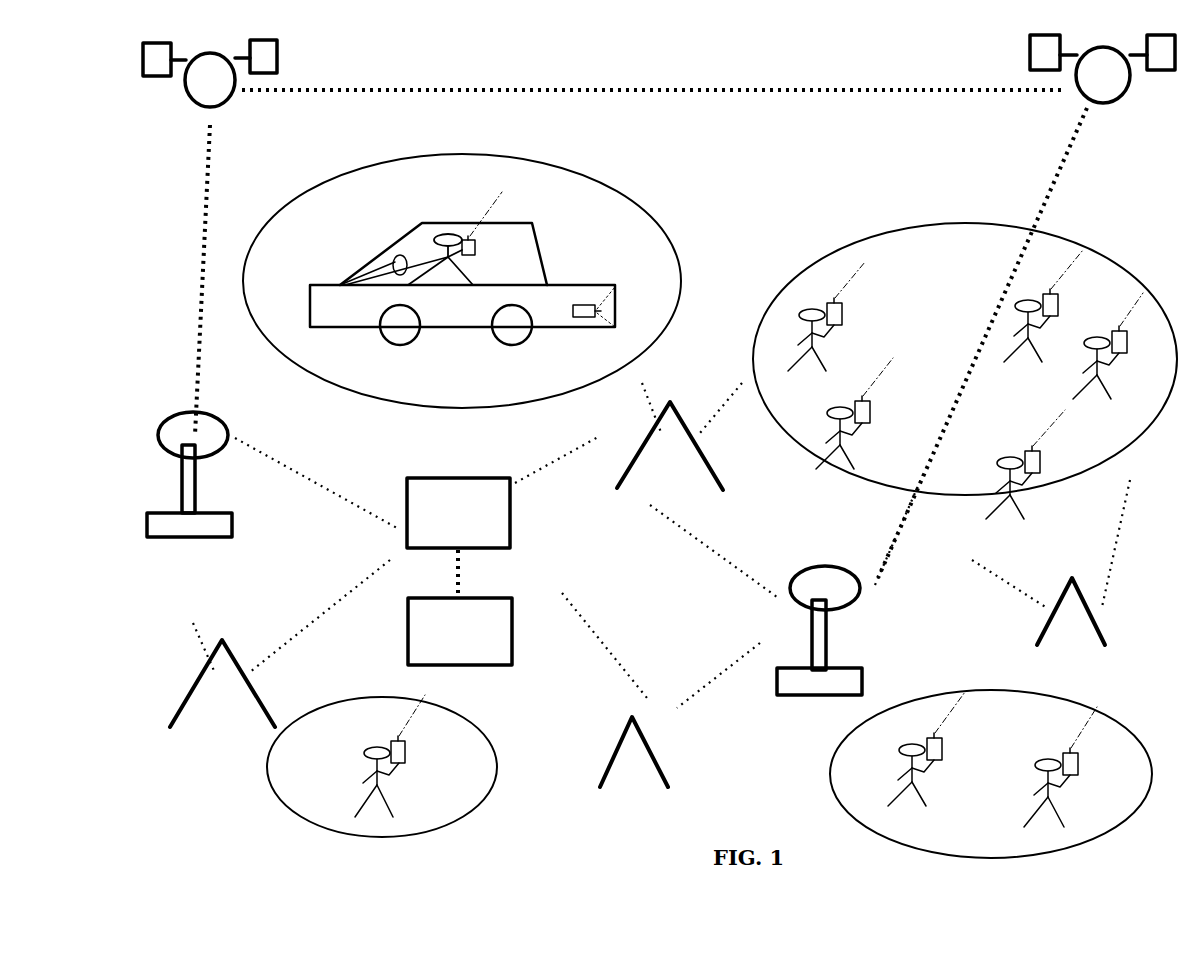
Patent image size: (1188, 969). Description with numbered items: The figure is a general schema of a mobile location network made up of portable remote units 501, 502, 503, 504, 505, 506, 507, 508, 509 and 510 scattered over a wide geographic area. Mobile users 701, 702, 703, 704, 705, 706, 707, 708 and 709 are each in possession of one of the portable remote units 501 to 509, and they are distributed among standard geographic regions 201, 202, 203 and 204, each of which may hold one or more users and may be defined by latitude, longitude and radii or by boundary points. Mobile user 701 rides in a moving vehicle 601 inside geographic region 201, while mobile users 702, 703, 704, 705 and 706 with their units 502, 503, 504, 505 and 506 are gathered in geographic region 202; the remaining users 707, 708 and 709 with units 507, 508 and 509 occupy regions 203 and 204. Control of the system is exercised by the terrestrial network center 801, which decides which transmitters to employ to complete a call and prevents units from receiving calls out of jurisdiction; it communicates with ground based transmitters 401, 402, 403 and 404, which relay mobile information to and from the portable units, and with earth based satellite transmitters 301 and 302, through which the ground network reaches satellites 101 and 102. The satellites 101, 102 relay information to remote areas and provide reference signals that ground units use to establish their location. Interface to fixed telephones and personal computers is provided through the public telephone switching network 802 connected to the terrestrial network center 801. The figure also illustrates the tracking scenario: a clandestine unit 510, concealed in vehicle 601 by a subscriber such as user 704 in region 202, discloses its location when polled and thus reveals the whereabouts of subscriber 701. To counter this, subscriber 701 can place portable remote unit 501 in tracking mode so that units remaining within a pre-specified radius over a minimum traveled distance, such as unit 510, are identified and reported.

The satellite 101 is at (277, 58).
The satellite 102 is at (1028, 52).
The geographic region 201 is at (612, 193).
The geographic region 202 is at (905, 228).
The geographic region 203 is at (1132, 735).
The geographic region 204 is at (475, 808).
The earth based satellite transmitter 301 is at (230, 425).
The earth based satellite transmitter 302 is at (828, 622).
The ground based transmitter 401 is at (712, 460).
The ground based transmitter 402 is at (1100, 640).
The ground based transmitter 403 is at (648, 745).
The ground based transmitter 404 is at (238, 650).
The portable remote unit 501 is at (476, 250).
The portable remote unit 502 is at (843, 315).
The portable remote unit 503 is at (872, 412).
The portable remote unit 504 is at (1058, 303).
The portable remote unit 505 is at (1127, 340).
The portable remote unit 506 is at (1040, 460).
The portable remote unit 507 is at (942, 748).
The portable remote unit 508 is at (1063, 752).
The portable remote unit 509 is at (405, 748).
The clandestine unit 510 is at (585, 305).
The vehicle 601 is at (390, 245).
The mobile user 701 is at (447, 233).
The mobile user 702 is at (805, 325).
The mobile user 703 is at (852, 437).
The mobile user 704 is at (1027, 353).
The mobile user 705 is at (1110, 368).
The mobile user 706 is at (1005, 475).
The mobile user 707 is at (895, 760).
The mobile user 708 is at (1062, 795).
The mobile user 709 is at (368, 773).
The terrestrial network center 801 is at (512, 523).
The public telephone switching network 802 is at (512, 645).